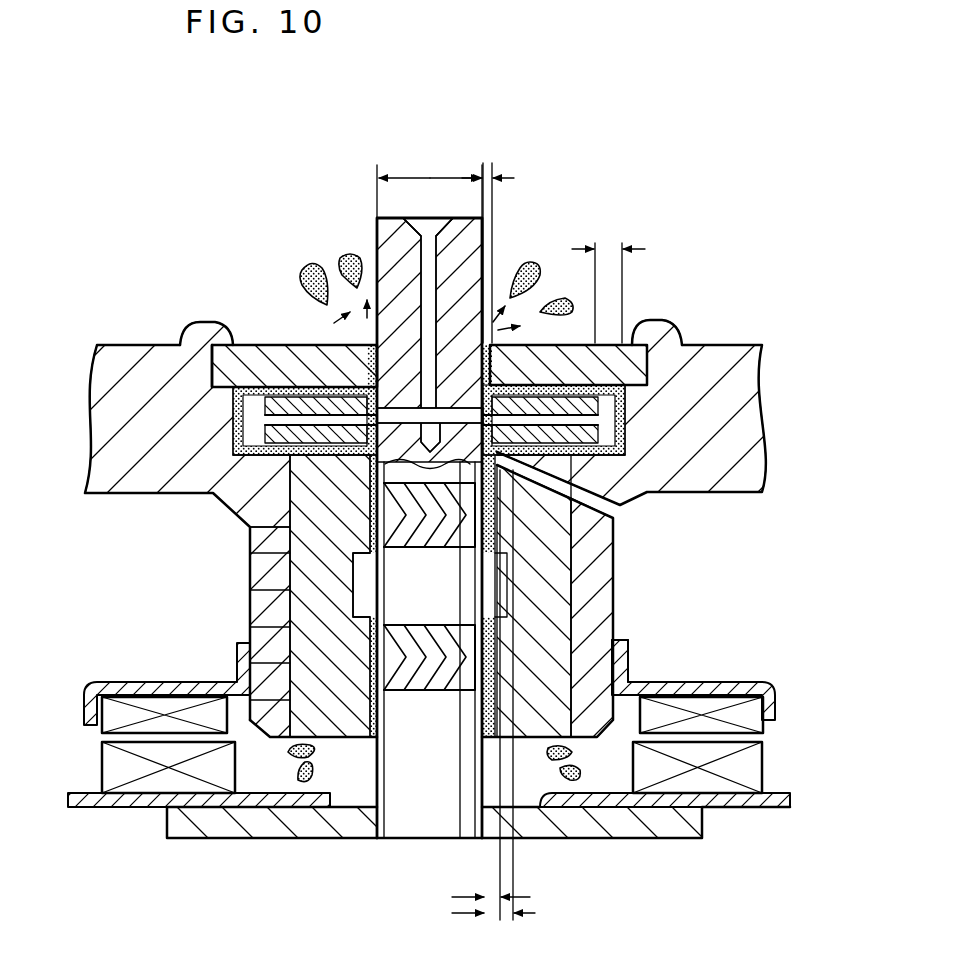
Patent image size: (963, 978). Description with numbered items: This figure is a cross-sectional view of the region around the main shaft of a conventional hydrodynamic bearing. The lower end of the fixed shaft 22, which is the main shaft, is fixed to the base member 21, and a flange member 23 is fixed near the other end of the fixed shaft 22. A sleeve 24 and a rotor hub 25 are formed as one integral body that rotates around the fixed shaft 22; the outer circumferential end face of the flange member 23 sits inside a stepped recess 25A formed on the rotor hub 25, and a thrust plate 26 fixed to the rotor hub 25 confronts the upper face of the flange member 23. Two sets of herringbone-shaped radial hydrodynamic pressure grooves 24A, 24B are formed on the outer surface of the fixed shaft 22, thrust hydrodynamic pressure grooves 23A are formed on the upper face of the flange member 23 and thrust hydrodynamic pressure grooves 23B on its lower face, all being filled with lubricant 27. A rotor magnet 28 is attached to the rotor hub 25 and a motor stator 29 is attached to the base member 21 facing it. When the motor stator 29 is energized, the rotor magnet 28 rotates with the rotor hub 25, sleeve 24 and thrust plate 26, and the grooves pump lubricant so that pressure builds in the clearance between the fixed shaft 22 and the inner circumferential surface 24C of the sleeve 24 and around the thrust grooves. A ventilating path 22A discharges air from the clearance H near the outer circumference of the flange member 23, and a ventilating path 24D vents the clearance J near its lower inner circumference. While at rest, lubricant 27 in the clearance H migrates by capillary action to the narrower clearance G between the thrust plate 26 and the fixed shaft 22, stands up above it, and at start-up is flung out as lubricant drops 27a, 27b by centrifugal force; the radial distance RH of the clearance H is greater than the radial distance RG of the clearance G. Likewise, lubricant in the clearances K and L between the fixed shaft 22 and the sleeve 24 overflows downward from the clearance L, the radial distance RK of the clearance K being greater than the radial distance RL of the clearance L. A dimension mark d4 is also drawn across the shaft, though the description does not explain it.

The base member 21 is at (215, 825).
The fixed shaft 22 is at (415, 818).
The ventilating path 22A is at (412, 237).
The flange member 23 is at (568, 412).
The thrust hydrodynamic pressure grooves 23A is at (100, 348).
The thrust hydrodynamic pressure grooves 23B is at (590, 463).
The sleeve 24 is at (537, 592).
The radial hydrodynamic pressure grooves 24A is at (497, 560).
The radial hydrodynamic pressure grooves 24B is at (523, 640).
The inner circumferential surface of the sleeve 24C is at (370, 636).
The ventilating path 24D is at (608, 514).
The rotor hub 25 is at (117, 418).
The stepped recess 25A is at (612, 418).
The thrust plate 26 is at (200, 338).
The lubricant 27 is at (285, 362).
The lubricant drops 27a is at (345, 320).
The lubricant drops 27b is at (312, 270).
The rotor magnet 28 is at (118, 717).
The motor stator 29 is at (112, 760).
The shaft diameter d4 is at (429, 185).
The radial distance of clearance G RG is at (488, 177).
The radial distance of clearance H RH is at (609, 247).
The radial distance of clearance L RL is at (493, 895).
The radial distance of clearance K RK is at (497, 918).
The clearance G is at (537, 343).
The clearance H is at (240, 400).
The clearance J is at (222, 503).
The clearance K is at (250, 556).
The clearance L is at (240, 652).